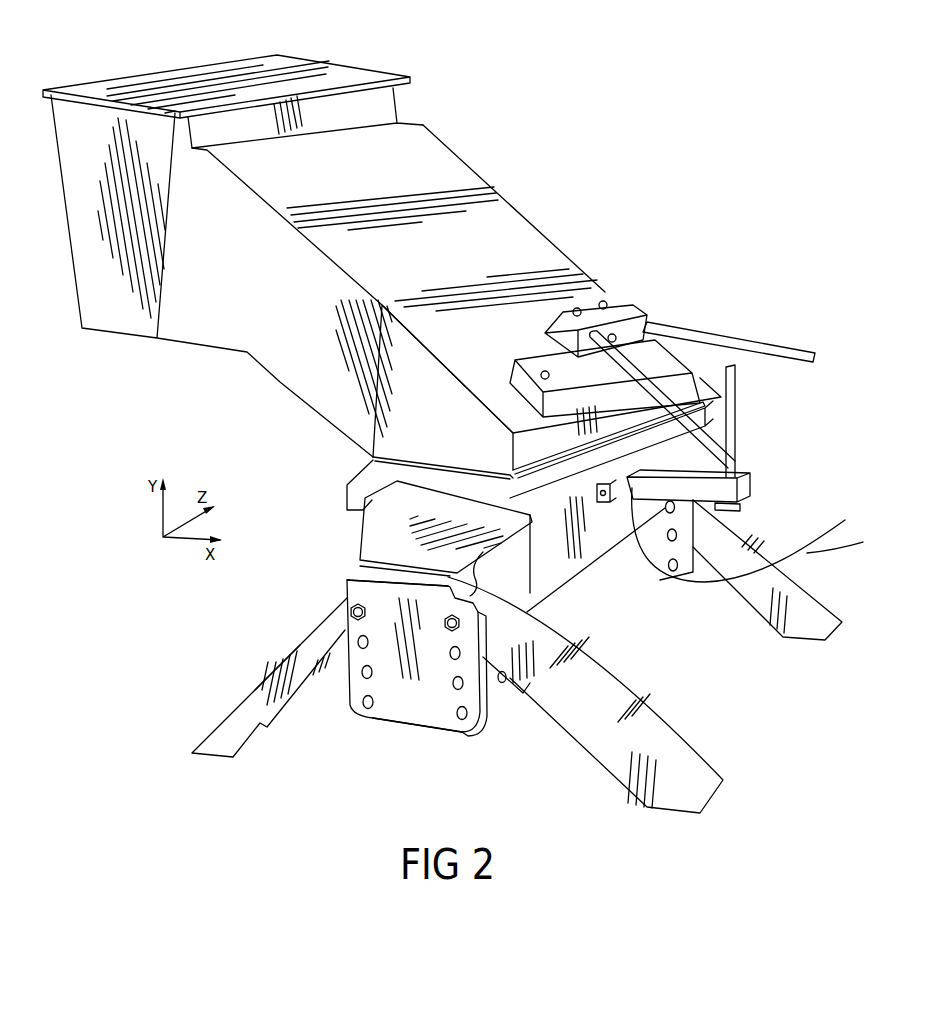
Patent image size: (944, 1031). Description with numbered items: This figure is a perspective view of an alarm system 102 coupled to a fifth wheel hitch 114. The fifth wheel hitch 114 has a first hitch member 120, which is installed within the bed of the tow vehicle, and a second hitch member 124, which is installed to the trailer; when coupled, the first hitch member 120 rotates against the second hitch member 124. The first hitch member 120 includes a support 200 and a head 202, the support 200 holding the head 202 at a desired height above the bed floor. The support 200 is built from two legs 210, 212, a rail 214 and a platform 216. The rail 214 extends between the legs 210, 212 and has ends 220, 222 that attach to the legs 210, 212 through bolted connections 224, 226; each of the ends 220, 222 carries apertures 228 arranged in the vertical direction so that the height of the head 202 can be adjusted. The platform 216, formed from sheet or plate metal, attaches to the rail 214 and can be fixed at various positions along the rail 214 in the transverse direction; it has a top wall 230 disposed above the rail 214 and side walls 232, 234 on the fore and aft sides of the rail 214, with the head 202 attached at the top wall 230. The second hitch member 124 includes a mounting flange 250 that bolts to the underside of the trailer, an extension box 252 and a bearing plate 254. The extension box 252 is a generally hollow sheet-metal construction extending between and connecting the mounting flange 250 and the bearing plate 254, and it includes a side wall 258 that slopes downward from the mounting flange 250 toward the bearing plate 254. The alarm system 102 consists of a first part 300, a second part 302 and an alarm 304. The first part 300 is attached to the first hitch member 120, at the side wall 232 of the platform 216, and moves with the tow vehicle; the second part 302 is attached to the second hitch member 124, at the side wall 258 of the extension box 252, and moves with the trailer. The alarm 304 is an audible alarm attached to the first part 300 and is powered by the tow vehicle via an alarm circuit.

The alarm system 102 is at (630, 308).
The fifth wheel hitch 114 is at (133, 80).
The first hitch member 120 is at (258, 693).
The second hitch member 124 is at (445, 178).
The support 200 is at (217, 737).
The head 202 is at (367, 545).
The leg 210 is at (808, 598).
The leg 212 is at (680, 762).
The rail 214 is at (403, 685).
The platform 216 is at (550, 586).
The end 220 is at (800, 438).
The end 222 is at (418, 715).
The bolted connection 224 is at (800, 402).
The bolted connection 226 is at (347, 617).
The apertures 228 is at (458, 718).
The top wall 230 is at (443, 488).
The side wall 232 is at (563, 566).
The side wall 234 is at (363, 521).
The mounting flange 250 is at (340, 70).
The extension box 252 is at (490, 218).
The bearing plate 254 is at (372, 462).
The side wall 258 is at (518, 272).
The first part 300 is at (747, 490).
The second part 302 is at (730, 333).
The alarm 304 is at (738, 506).